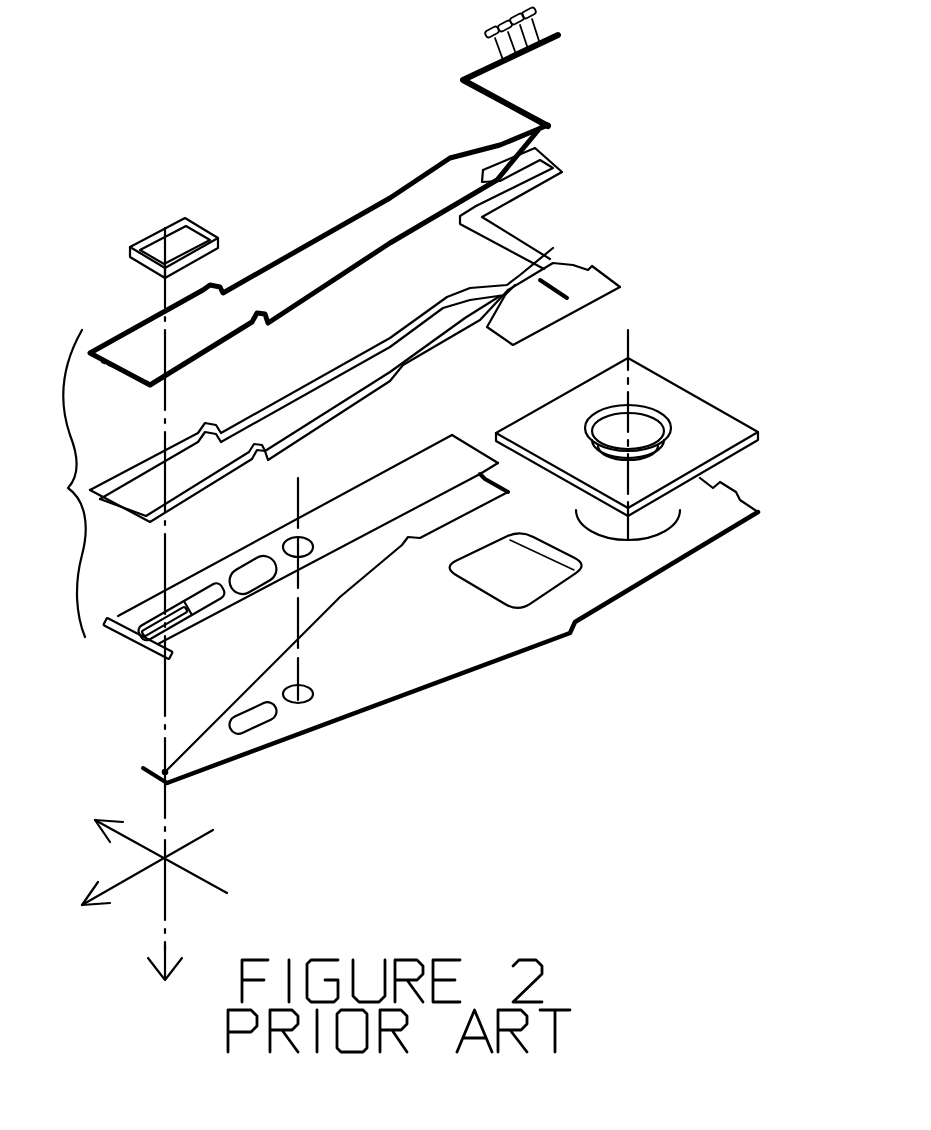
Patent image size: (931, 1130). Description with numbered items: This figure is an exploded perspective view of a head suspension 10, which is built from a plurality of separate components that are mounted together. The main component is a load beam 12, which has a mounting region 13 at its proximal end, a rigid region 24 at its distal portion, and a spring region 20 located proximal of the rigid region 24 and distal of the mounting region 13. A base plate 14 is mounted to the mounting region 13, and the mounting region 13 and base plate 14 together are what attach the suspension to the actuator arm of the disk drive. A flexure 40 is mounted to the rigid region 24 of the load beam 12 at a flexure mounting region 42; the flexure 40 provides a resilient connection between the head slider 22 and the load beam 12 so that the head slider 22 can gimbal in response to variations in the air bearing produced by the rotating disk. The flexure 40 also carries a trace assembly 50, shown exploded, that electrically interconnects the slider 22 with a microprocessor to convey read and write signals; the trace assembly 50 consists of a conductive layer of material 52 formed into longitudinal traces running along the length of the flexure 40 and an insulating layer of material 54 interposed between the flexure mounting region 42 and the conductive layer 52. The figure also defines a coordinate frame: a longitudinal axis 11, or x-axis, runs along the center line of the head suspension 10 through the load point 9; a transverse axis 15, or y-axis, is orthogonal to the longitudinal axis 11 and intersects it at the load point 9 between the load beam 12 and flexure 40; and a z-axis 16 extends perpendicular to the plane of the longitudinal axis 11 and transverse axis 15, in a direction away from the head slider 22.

The load point 9 is at (163, 763).
The head suspension 10 is at (657, 305).
The longitudinal axis 11 is at (125, 880).
The load beam 12 is at (440, 668).
The mounting region 13 is at (723, 520).
The base plate 14 is at (702, 413).
The transverse axis 15 is at (143, 845).
The z-axis 16 is at (167, 946).
The spring region 20 is at (595, 598).
The head slider 22 is at (158, 233).
The rigid region 24 is at (320, 713).
The flexure 40 is at (289, 442).
The flexure mounting region 42 is at (392, 473).
The trace assembly 50 is at (572, 128).
The conductive layer of material 52 is at (303, 243).
The insulating layer of material 54 is at (500, 237).